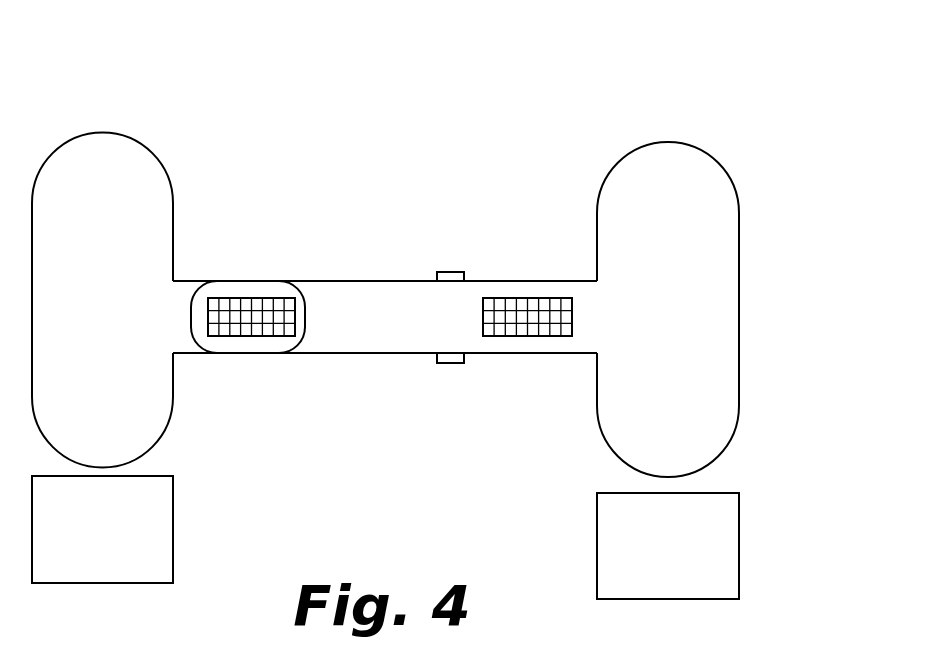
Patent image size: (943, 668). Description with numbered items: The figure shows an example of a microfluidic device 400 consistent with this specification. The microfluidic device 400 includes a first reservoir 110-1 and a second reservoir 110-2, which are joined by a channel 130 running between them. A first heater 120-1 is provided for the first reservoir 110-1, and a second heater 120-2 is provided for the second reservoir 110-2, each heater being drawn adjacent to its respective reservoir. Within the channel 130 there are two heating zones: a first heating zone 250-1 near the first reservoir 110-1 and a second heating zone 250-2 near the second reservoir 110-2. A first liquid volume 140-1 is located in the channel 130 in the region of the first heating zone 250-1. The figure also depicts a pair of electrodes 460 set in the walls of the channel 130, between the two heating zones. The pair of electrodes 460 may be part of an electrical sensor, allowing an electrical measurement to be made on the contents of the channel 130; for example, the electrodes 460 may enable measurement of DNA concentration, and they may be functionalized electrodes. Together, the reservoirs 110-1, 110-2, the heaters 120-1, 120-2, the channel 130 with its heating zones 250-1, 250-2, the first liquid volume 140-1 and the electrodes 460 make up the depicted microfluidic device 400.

The microfluidic device 400 is at (192, 96).
The first reservoir 110-1 is at (70, 265).
The second reservoir 110-2 is at (635, 275).
The channel 130 is at (336, 345).
The first heating zone 250-1 is at (252, 314).
The second heating zone 250-2 is at (526, 313).
The pair of electrodes 460 is at (440, 296).
The first liquid volume 140-1 is at (243, 371).
The first heater 120-1 is at (70, 573).
The second heater 120-2 is at (635, 591).